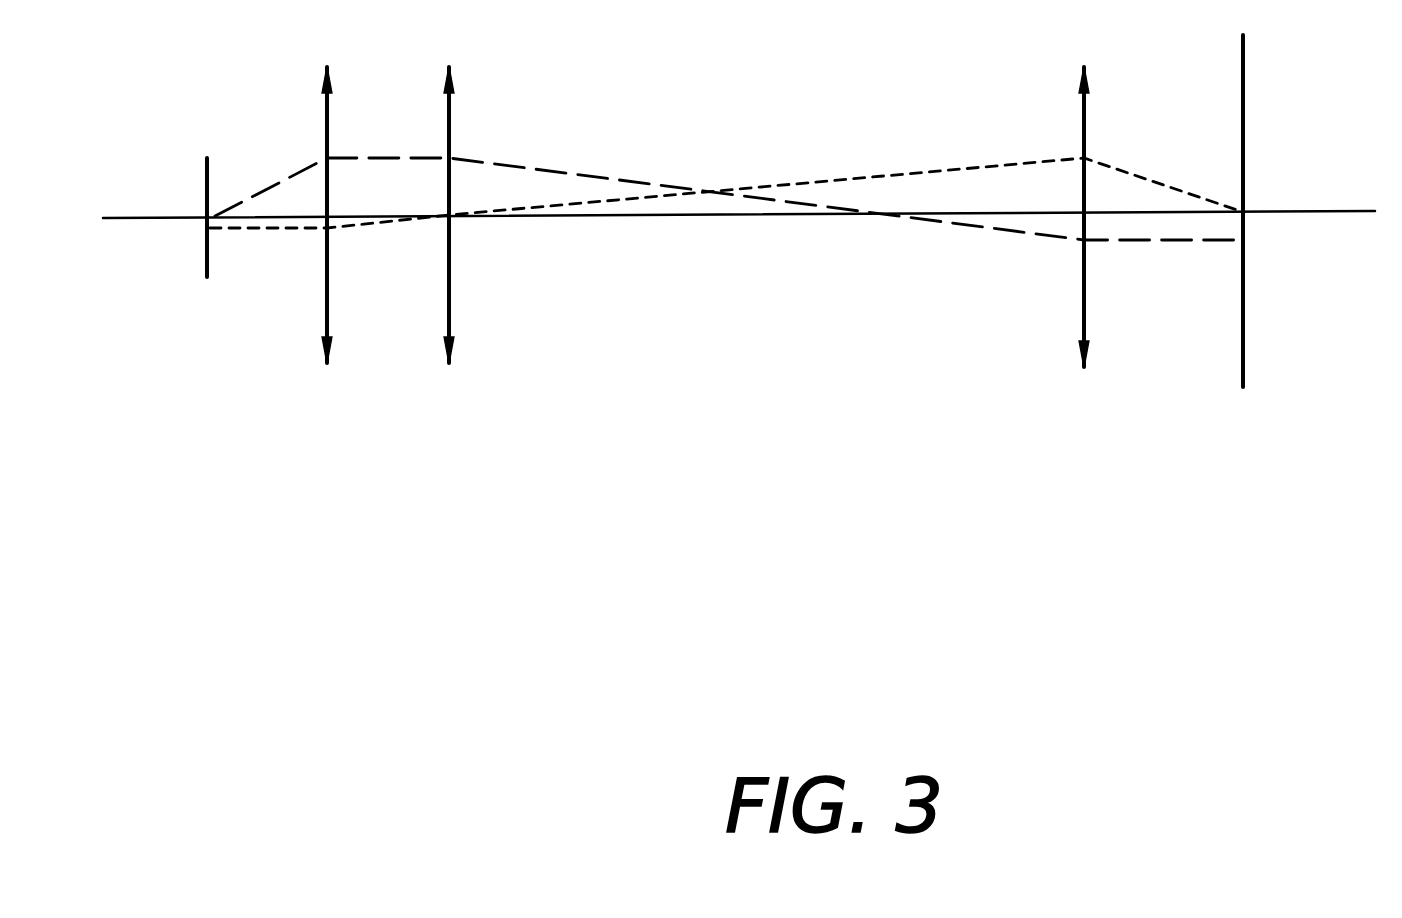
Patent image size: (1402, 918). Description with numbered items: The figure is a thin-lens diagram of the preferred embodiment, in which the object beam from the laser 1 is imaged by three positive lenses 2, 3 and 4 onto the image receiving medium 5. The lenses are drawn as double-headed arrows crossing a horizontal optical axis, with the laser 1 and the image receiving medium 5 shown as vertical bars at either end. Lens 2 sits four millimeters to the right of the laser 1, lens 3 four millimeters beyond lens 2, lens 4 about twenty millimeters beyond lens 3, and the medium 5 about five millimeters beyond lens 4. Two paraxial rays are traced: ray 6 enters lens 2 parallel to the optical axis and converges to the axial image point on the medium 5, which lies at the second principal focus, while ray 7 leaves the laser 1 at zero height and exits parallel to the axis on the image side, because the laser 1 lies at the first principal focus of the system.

The object beam / laser 1 is at (207, 253).
The first positive lens 2 is at (327, 265).
The second positive lens 3 is at (449, 260).
The third positive lens 4 is at (1084, 273).
The image receiving medium 5 is at (1243, 271).
The paraxial ray 6 is at (852, 178).
The paraxial ray 7 is at (976, 225).